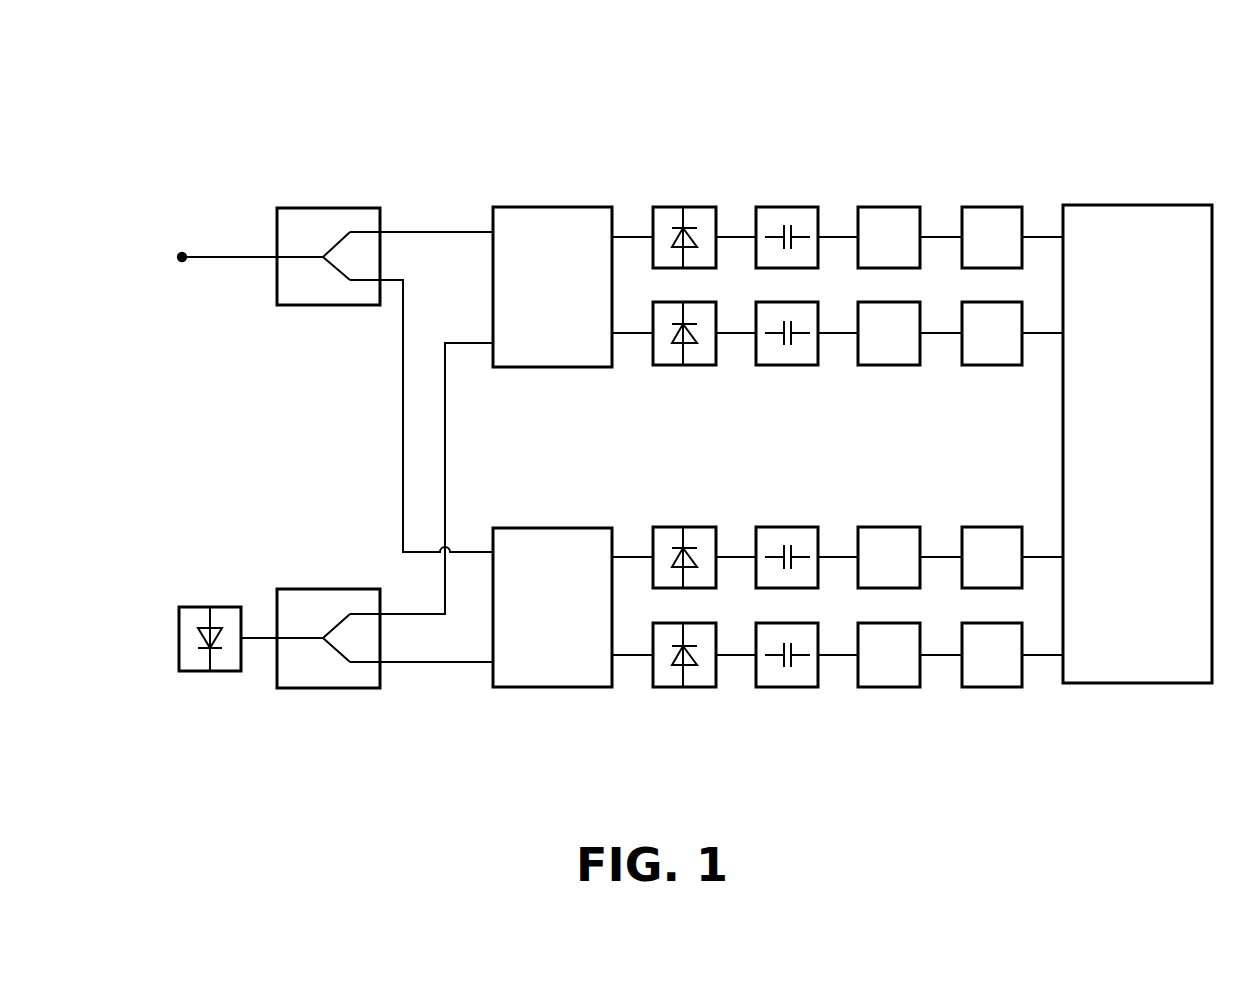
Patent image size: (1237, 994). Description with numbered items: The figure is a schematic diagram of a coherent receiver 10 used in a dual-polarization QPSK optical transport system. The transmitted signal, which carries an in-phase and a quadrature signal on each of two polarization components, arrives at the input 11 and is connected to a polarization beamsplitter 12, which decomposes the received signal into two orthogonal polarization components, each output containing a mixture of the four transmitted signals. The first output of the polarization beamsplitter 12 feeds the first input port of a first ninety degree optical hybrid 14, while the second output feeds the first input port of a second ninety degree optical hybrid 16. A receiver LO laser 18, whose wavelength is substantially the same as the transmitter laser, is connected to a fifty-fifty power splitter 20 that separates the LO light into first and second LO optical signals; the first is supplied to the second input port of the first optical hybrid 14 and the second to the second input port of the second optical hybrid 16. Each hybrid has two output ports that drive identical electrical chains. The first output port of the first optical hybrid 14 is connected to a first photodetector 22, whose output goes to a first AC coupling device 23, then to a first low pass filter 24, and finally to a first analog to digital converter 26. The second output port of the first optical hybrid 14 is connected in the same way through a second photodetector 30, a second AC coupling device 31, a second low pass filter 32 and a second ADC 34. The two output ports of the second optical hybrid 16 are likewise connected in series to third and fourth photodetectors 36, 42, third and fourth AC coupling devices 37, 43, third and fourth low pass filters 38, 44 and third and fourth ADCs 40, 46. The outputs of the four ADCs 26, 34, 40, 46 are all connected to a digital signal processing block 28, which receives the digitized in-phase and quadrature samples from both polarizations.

The coherent receiver 10 is at (958, 80).
The input 11 is at (207, 256).
The polarization beamsplitter 12 is at (323, 207).
The first 90 degree optical hybrid 14 is at (547, 206).
The second 90 degree optical hybrid 16 is at (547, 527).
The receiver LO laser 18 is at (208, 606).
The 50/50 power splitter 20 is at (323, 588).
The first photodetector 22 is at (683, 206).
The first AC coupling device 23 is at (786, 206).
The first low pass filter 24 is at (886, 206).
The first analog to digital converter 26 is at (988, 206).
The digital signal processing block 28 is at (1134, 204).
The second photodetector 30 is at (683, 366).
The second AC coupling device 31 is at (785, 366).
The second low pass filter 32 is at (886, 366).
The second ADC 34 is at (989, 366).
The third photodetector 36 is at (683, 526).
The third AC coupling device 37 is at (786, 526).
The third low pass filter 38 is at (886, 526).
The third ADC 40 is at (988, 526).
The fourth photodetector 42 is at (683, 688).
The fourth AC coupling device 43 is at (785, 688).
The fourth low pass filter 44 is at (886, 688).
The fourth ADC 46 is at (989, 688).